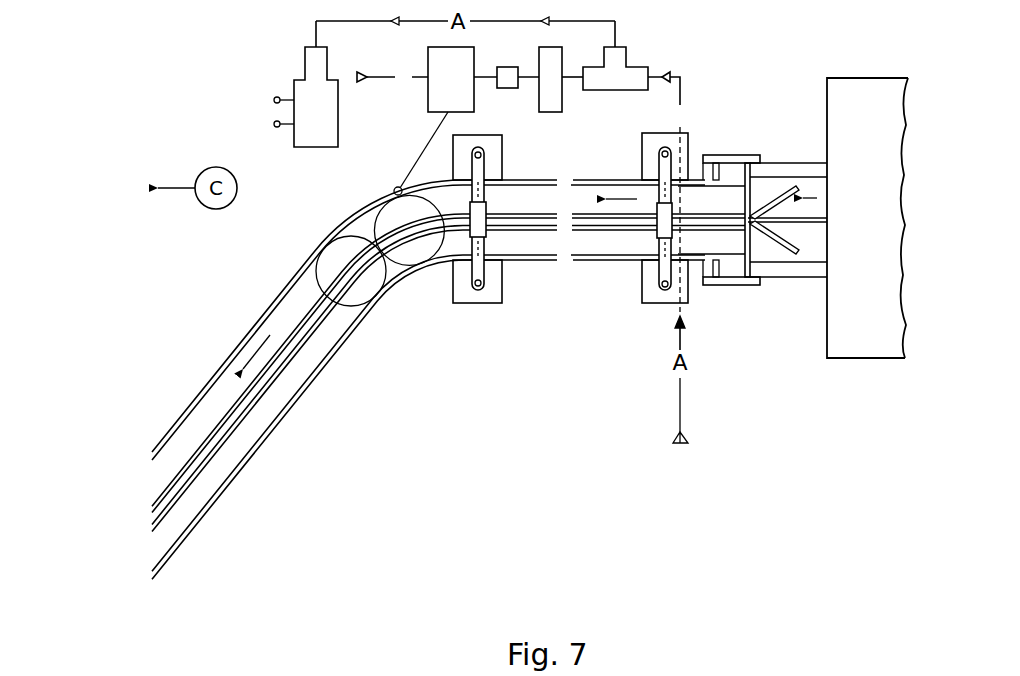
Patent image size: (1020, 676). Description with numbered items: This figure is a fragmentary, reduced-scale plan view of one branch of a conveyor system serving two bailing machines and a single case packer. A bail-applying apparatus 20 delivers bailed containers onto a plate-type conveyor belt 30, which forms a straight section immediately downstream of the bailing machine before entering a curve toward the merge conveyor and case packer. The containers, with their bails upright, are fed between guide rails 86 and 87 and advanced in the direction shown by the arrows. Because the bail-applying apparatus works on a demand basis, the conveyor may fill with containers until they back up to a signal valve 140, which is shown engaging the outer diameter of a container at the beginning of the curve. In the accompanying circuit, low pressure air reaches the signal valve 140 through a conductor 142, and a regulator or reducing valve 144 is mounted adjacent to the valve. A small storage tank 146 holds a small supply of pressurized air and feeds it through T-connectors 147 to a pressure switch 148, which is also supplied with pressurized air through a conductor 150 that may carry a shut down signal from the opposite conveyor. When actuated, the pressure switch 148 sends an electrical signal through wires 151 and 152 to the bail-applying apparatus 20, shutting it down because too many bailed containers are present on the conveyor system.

The bail-applying apparatus 20 is at (833, 316).
The plate-type conveyor belt 30 is at (245, 448).
The guide rail 86 is at (303, 313).
The guide rail 87 is at (322, 320).
The signal valve 140 is at (430, 93).
The conductor 142 is at (375, 76).
The regulator or reducing valve 144 is at (506, 67).
The small storage tank 146 is at (553, 104).
The T-connector 147 is at (623, 57).
The pressure switch 148 is at (330, 137).
The conductor 150 is at (682, 81).
The wire 151 is at (273, 98).
The wire 152 is at (273, 125).